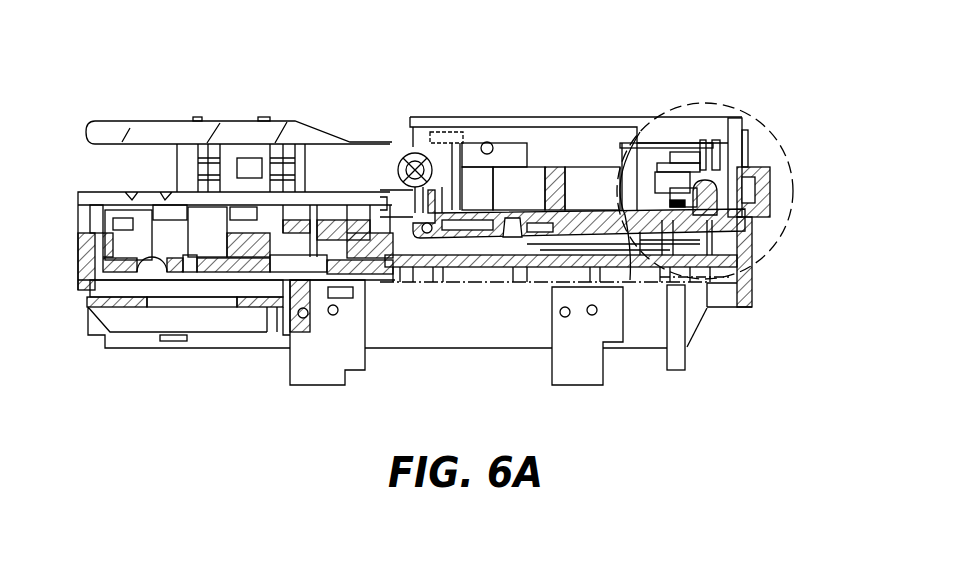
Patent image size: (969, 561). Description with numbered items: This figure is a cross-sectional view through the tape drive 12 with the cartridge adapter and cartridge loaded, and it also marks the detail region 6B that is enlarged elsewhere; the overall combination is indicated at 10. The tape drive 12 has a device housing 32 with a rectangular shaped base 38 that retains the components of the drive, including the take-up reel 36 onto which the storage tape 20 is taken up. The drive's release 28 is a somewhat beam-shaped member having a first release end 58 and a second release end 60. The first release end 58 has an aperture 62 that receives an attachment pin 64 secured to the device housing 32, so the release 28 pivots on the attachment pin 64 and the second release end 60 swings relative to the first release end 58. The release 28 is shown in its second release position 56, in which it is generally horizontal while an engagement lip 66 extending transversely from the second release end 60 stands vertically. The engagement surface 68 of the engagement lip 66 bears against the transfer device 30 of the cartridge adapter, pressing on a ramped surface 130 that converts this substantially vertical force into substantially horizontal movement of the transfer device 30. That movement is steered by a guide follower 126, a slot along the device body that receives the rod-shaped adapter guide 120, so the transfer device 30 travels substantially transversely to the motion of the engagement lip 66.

The disk drive apparatus 10 is at (550, 86).
The tape drive 12 is at (174, 357).
The storage tape 20 is at (432, 146).
The release 28 is at (563, 239).
The transfer device 30 is at (667, 285).
The device housing 32 is at (250, 345).
The take-up reel 36 is at (167, 134).
The base 38 is at (383, 333).
The second release position 56 is at (662, 250).
The first release end 58 is at (437, 240).
The second release end 60 is at (690, 202).
The aperture 62 is at (424, 238).
The attachment pin 64 is at (480, 150).
The engagement lip 66 is at (567, 236).
The engagement surface 68 is at (717, 217).
The adapter guide 120 is at (645, 128).
The guide follower 126 is at (658, 236).
The ramped surface 130 is at (680, 200).
The detail view circle 6B is at (725, 105).